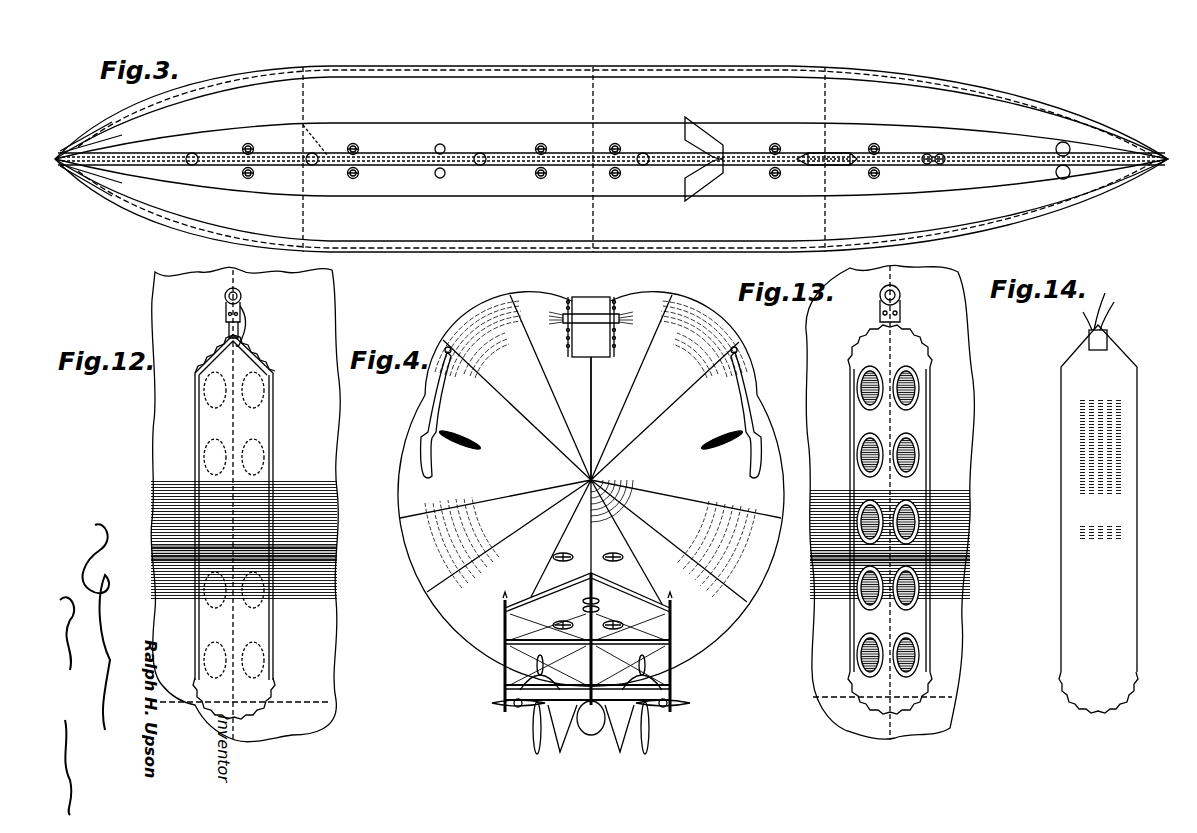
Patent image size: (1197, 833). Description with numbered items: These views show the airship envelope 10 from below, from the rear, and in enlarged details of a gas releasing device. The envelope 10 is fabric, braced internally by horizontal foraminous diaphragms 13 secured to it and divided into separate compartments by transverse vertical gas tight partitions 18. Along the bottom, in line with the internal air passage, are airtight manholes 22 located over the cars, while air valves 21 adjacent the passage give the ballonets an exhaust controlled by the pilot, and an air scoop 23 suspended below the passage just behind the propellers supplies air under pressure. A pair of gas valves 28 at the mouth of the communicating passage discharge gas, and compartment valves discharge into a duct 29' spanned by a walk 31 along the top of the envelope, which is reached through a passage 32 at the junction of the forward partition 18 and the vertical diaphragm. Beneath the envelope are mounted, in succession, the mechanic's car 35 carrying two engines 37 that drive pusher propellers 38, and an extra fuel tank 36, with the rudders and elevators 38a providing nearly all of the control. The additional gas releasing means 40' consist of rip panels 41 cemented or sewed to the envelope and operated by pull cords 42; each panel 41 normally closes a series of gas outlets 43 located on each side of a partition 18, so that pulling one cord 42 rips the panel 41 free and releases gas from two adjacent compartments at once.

In FIG. 3, the envelope 10 is at (557, 66).
In FIG. 4, the envelope 10 is at (591, 489).
In FIG. 12, the envelope 10 is at (158, 278).
In FIG. 13, the horizontal foraminous diaphragm 13 is at (942, 697).
In FIG. 3, the transverse vertical gas tight partition 18 is at (300, 98).
In FIG. 12, the transverse vertical gas tight partition 18 is at (318, 478).
In FIG. 13, the transverse vertical gas tight partition 18 is at (895, 622).
In FIG. 3, the air valve 21 is at (243, 170).
In FIG. 4, the air valve 21 is at (556, 555).
In FIG. 3, the manhole 22 is at (312, 165).
In FIG. 3, the air scoop 23 is at (707, 114).
In FIG. 4, the air scoop 23 is at (536, 668).
In FIG. 3, the gas valve 28 is at (941, 153).
In FIG. 4, the gas valve 28 is at (583, 600).
In FIG. 4, the passageway or duct 29' is at (575, 418).
In FIG. 4, the walk 31 is at (598, 292).
In FIG. 3, the passage 32 is at (321, 150).
In FIG. 4, the mechanic's car 35 is at (591, 738).
In FIG. 3, the extra fuel tank 36 is at (811, 168).
In FIG. 4, the engine 37 is at (510, 714).
In FIG. 4, the propeller 38 is at (538, 748).
In FIG. 4, the rudders and elevators 38a is at (503, 690).
In FIG. 4, the gas releasing means 40' is at (607, 412).
In FIG. 12, the gas releasing means 40' is at (285, 526).
In FIG. 12, the rip panel 41 is at (262, 441).
In FIG. 14, the rip panel 41 is at (1140, 396).
In FIG. 12, the pull cord 42 is at (248, 319).
In FIG. 13, the pull cord 42 is at (890, 303).
In FIG. 14, the pull cord 42 is at (1112, 304).
In FIG. 12, the gas outlet 43 is at (204, 395).
In FIG. 13, the gas outlet 43 is at (922, 446).